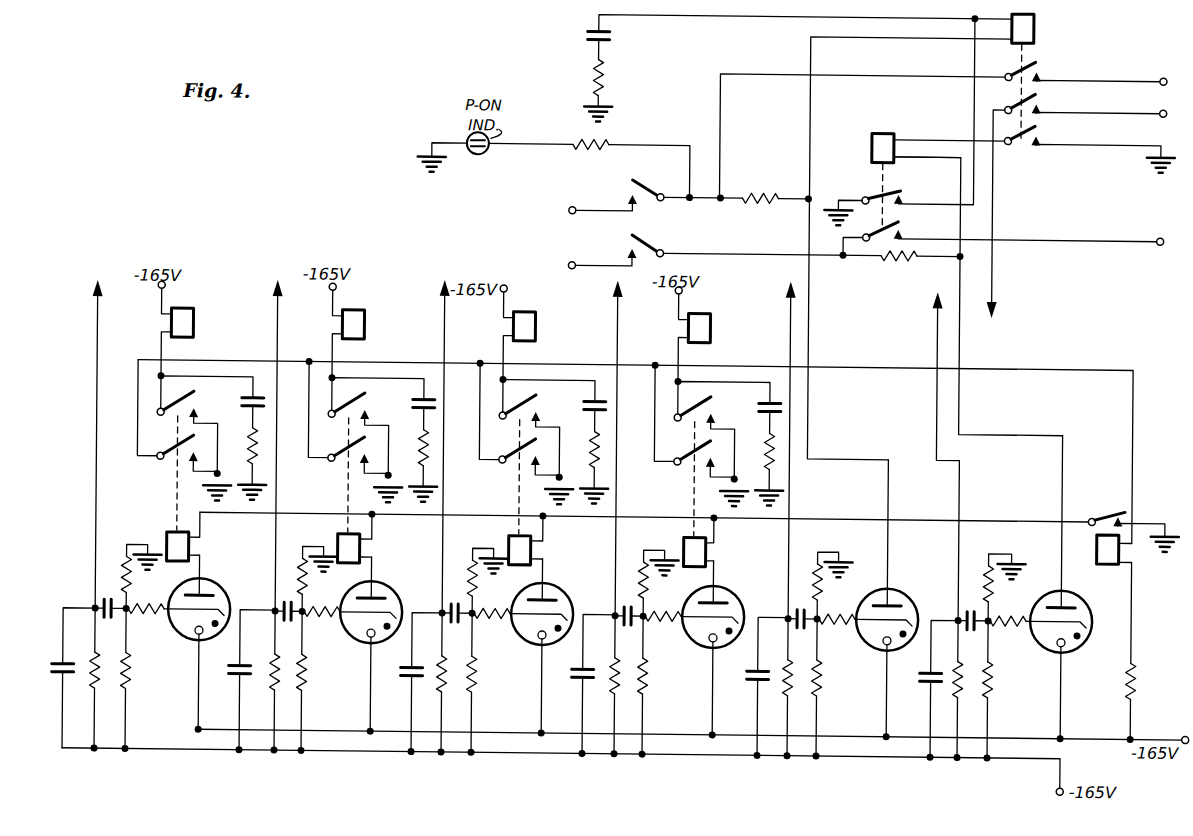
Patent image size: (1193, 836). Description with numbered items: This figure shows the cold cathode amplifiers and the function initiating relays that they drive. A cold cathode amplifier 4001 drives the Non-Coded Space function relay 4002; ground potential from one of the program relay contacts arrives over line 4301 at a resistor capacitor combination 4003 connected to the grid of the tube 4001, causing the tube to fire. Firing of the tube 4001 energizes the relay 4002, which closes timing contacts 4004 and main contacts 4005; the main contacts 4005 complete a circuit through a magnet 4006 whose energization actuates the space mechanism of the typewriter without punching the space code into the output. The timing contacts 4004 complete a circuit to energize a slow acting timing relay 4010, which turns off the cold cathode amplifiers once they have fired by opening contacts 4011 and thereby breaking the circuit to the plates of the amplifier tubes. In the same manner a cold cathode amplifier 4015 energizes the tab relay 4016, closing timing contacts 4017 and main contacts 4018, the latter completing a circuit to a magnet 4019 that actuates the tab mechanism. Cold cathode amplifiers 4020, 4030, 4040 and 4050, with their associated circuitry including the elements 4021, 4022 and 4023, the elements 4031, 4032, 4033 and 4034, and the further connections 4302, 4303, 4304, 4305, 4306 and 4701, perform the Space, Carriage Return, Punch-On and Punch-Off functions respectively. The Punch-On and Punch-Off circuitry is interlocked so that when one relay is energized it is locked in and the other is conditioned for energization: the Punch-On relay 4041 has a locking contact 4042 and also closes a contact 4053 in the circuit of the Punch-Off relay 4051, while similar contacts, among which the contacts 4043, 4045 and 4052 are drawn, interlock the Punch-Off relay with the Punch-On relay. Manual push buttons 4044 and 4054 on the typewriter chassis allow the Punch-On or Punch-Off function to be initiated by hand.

The cold cathode amplifier 4001 is at (208, 586).
The Non-Coded Space function relay 4002 is at (170, 531).
The resistor capacitor combination 4003 is at (192, 663).
The timing contacts 4004 is at (170, 452).
The main contacts 4005 is at (198, 389).
The magnet 4006 is at (197, 323).
The timing relay 4010 is at (1108, 554).
The contacts 4011 is at (1116, 500).
The cold cathode amplifier 4015 is at (380, 586).
The tab relay 4016 is at (342, 531).
The timing contacts 4017 is at (347, 455).
The main contacts 4018 is at (369, 389).
The magnet 4019 is at (368, 323).
The cold cathode amplifier 4020 is at (551, 586).
The relay 4021 is at (513, 531).
The relay contact 4022 is at (512, 453).
The relay and contact 4023 is at (539, 323).
The cold cathode amplifier 4030 is at (722, 587).
The relay 4031 is at (687, 531).
The relay contact 4032 is at (687, 453).
The relay contact 4033 is at (715, 389).
The relay 4034 is at (714, 323).
The cold cathode amplifier 4040 is at (896, 588).
The Punch-On relay 4041 is at (1036, 29).
The locking contact 4042 is at (1043, 56).
The relay contact 4043 is at (903, 183).
The manual push button 4044 is at (664, 164).
The relay contact 4045 is at (1046, 87).
The cold cathode amplifier 4050 is at (1070, 640).
The Punch-Off relay 4051 is at (885, 123).
The relay contact 4052 is at (901, 214).
The contact 4053 is at (1046, 119).
The manual push button 4054 is at (660, 236).
The line 4301 is at (99, 412).
The output line 4302 is at (279, 291).
The output line 4303 is at (446, 296).
The output line 4304 is at (619, 295).
The output line 4305 is at (792, 298).
The output line 4306 is at (939, 311).
The input line 4701 is at (996, 281).